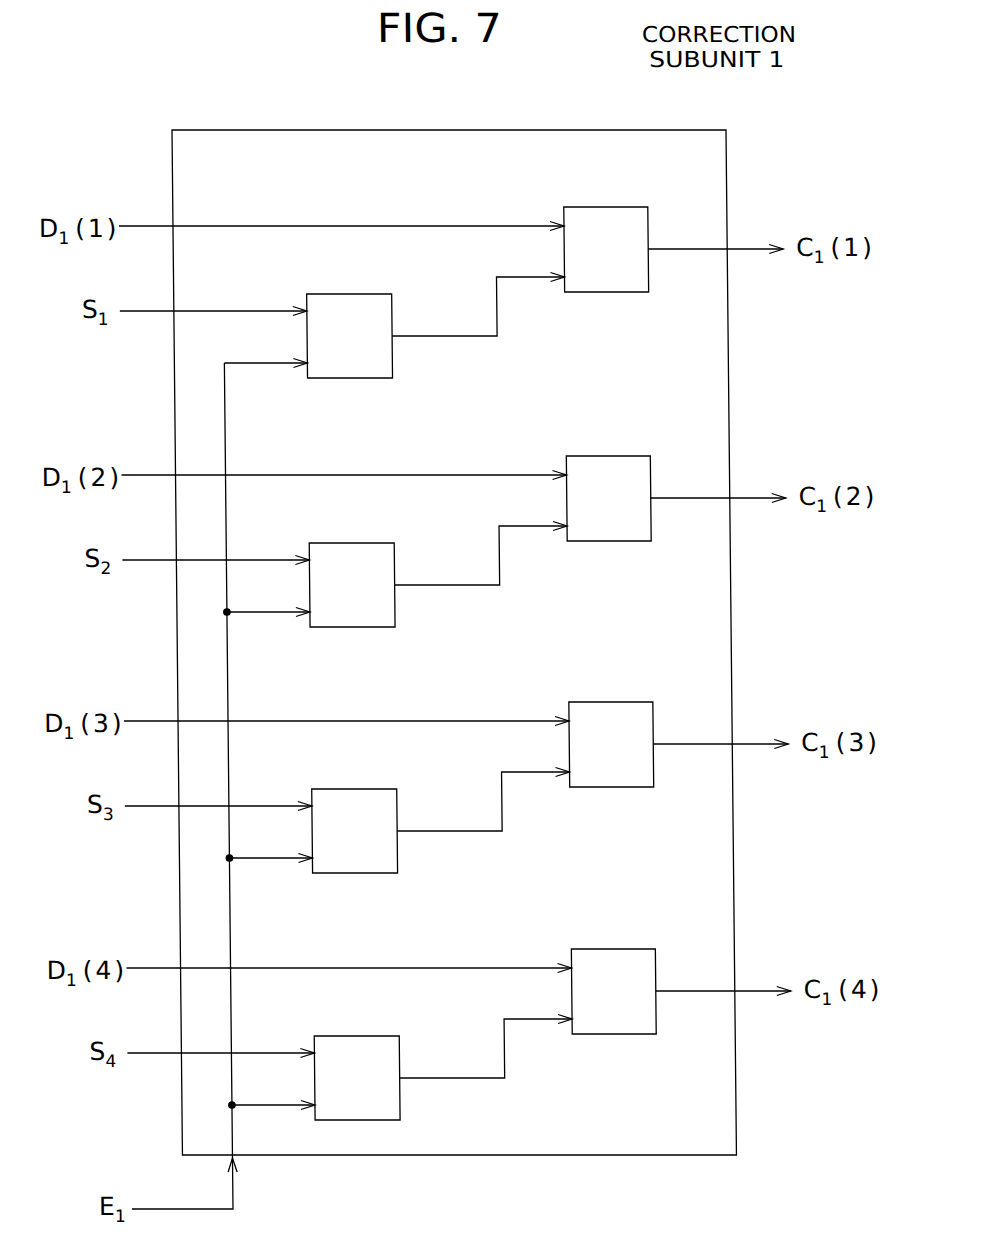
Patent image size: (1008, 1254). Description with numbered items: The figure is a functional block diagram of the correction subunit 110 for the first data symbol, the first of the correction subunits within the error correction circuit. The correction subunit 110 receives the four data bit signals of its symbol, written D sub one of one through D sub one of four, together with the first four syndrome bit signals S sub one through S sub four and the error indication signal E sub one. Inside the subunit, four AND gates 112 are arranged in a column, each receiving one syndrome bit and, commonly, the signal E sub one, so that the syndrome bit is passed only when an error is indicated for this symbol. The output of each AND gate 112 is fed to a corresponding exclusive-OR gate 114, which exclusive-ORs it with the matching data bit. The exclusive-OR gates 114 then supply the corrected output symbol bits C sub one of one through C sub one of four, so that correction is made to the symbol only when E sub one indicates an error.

The correction subunit 110 is at (648, 130).
The AND gate 112 is at (350, 294).
The exclusive-OR gate 114 is at (611, 207).